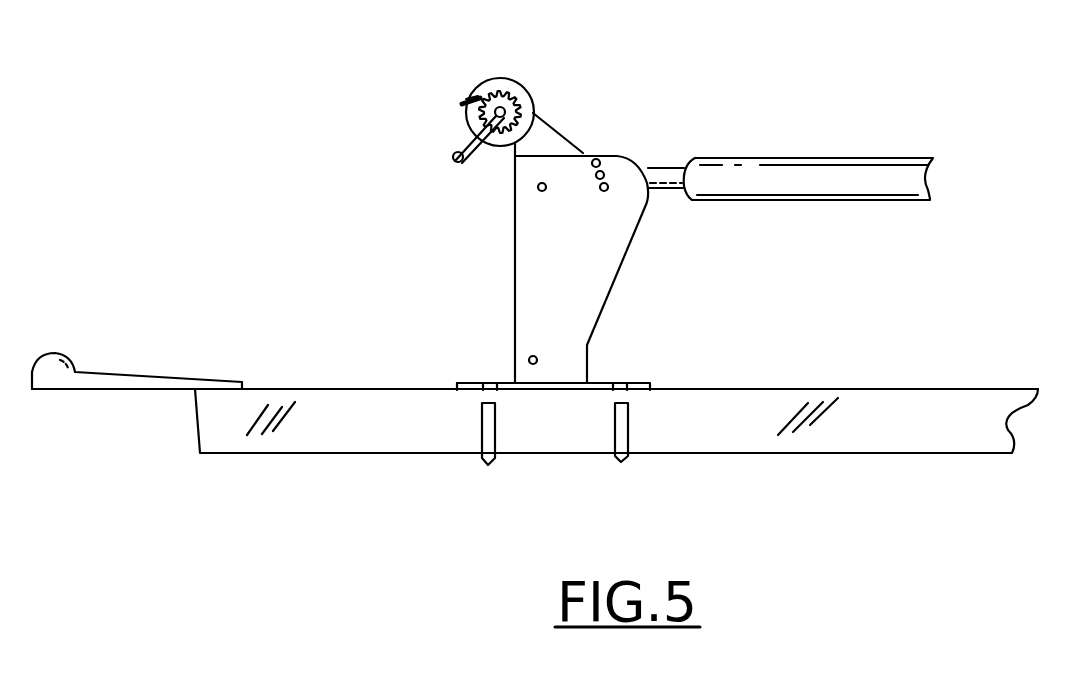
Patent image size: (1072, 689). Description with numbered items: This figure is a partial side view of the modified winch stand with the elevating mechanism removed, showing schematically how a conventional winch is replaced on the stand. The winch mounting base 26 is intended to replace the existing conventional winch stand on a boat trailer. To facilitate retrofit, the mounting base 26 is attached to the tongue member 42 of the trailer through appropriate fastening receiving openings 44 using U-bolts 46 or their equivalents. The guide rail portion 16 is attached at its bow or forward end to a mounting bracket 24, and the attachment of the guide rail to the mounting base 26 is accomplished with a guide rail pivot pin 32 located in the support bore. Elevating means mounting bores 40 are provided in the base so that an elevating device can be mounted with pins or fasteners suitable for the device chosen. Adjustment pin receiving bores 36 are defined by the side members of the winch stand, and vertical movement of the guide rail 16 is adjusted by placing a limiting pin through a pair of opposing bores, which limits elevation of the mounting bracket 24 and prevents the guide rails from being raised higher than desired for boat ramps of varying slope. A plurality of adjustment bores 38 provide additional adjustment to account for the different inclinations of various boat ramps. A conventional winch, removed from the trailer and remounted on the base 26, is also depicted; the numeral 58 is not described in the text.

The guide rail portion 16 is at (868, 157).
The mounting bracket 24 is at (667, 190).
The winch mounting base 26 is at (613, 280).
The guide rail pivot pin 32 is at (538, 187).
The adjustment pin receiving bores 36 is at (600, 189).
The adjustment bores 38 is at (604, 170).
The elevating means mounting bores 40 is at (530, 357).
The tongue member 42 is at (332, 445).
The fastening receiving openings 44 is at (488, 383).
The U-bolts 46 is at (623, 463).
The ratchet wheel 58 is at (522, 82).